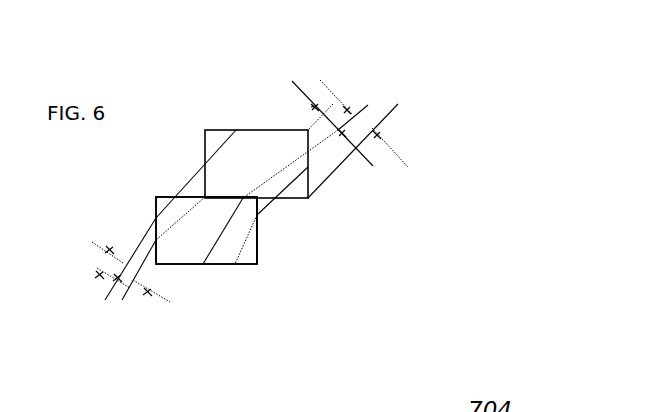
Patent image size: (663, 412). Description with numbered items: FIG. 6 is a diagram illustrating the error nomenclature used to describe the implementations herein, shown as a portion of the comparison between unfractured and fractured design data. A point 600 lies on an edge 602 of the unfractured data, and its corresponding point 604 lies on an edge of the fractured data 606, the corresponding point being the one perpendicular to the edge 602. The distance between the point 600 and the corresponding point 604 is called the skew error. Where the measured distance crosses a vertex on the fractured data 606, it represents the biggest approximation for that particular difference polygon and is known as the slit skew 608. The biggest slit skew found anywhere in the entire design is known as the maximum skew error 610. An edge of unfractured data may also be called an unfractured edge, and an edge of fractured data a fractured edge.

The point on an edge of the unfractured data 600 is at (263, 208).
The edge of the unfractured data 602 is at (362, 102).
The corresponding point on an edge of the fractured data 604 is at (207, 252).
The fractured data 606 is at (257, 253).
The slit skew 608 is at (118, 318).
The maximum skew error 610 is at (385, 98).